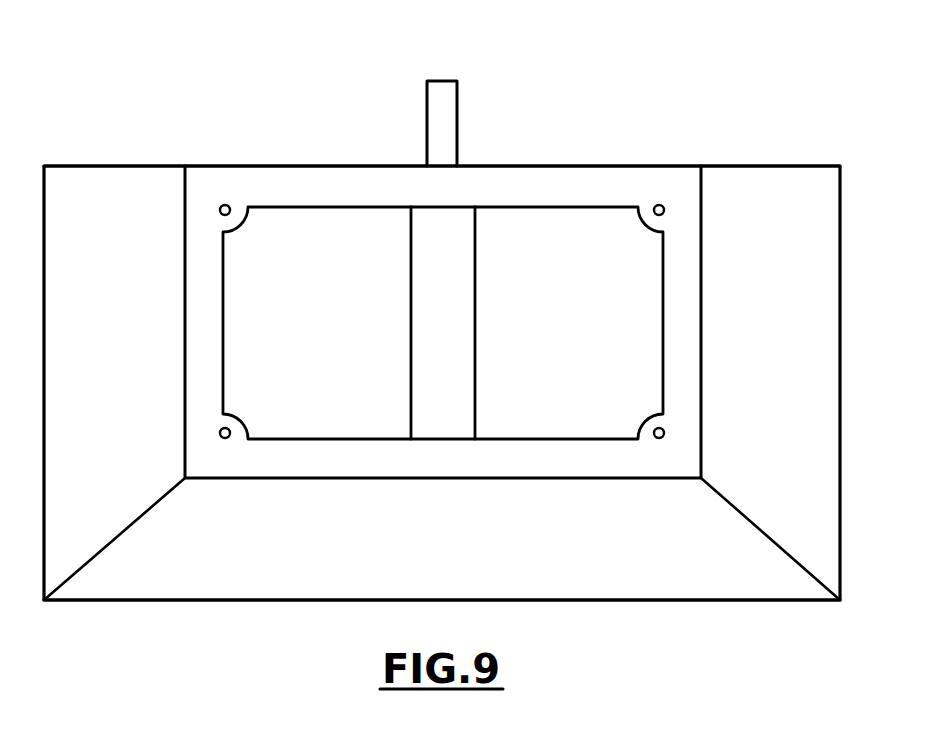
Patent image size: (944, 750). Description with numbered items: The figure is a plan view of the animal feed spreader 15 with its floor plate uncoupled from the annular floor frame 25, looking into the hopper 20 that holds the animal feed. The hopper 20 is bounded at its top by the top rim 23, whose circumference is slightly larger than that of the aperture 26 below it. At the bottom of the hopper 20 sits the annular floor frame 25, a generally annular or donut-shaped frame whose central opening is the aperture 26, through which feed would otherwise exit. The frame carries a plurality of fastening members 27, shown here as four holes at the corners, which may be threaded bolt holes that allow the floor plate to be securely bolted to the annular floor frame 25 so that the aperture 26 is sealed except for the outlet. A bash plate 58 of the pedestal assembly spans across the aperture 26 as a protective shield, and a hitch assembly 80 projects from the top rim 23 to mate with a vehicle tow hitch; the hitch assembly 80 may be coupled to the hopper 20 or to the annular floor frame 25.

The animal feed spreader 15 is at (814, 114).
The hopper 20 is at (211, 558).
The top rim 23 is at (143, 166).
The annular floor frame 25 is at (369, 183).
The aperture 26 is at (303, 205).
The fastening members 27 is at (225, 205).
The bash plate 58 is at (467, 358).
The hitch assembly 80 is at (450, 128).